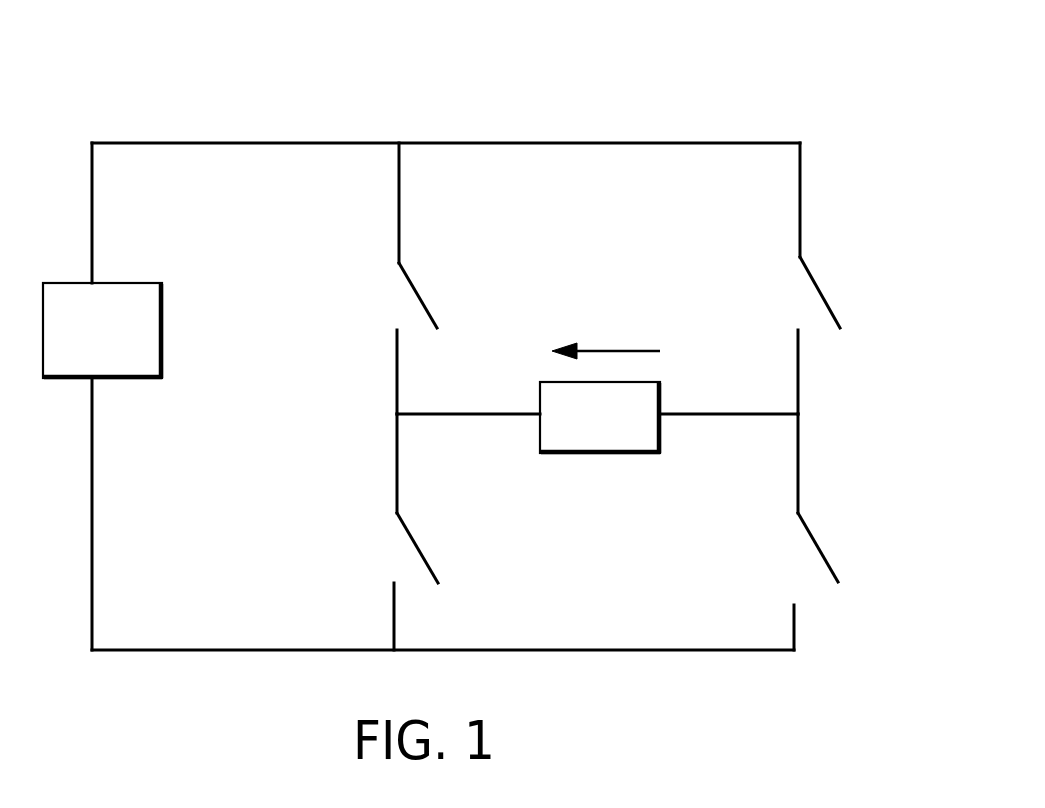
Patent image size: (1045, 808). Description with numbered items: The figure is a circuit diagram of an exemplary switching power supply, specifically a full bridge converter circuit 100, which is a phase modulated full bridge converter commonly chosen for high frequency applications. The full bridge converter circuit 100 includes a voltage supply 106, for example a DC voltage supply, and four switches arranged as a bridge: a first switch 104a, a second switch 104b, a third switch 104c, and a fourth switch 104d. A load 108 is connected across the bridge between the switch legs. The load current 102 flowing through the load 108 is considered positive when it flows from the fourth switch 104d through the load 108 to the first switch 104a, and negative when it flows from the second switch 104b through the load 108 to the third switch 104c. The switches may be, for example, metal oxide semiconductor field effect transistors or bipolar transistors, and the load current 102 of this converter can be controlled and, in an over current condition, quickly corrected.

The full bridge converter circuit 100 is at (596, 103).
The load current 102 is at (615, 348).
The first switch 104a is at (432, 560).
The second switch 104b is at (425, 303).
The third switch 104c is at (825, 553).
The fourth switch 104d is at (828, 300).
The voltage supply 106 is at (145, 283).
The load 108 is at (625, 455).